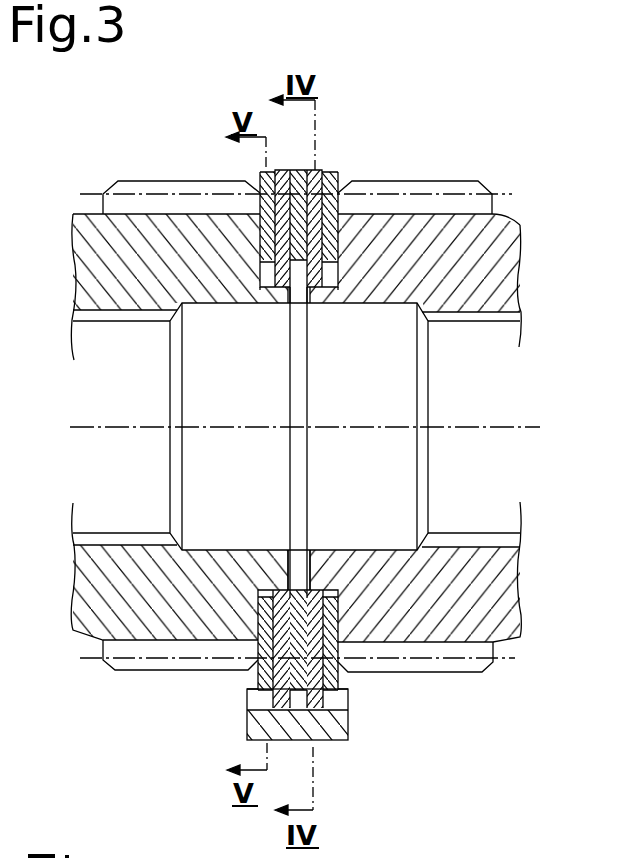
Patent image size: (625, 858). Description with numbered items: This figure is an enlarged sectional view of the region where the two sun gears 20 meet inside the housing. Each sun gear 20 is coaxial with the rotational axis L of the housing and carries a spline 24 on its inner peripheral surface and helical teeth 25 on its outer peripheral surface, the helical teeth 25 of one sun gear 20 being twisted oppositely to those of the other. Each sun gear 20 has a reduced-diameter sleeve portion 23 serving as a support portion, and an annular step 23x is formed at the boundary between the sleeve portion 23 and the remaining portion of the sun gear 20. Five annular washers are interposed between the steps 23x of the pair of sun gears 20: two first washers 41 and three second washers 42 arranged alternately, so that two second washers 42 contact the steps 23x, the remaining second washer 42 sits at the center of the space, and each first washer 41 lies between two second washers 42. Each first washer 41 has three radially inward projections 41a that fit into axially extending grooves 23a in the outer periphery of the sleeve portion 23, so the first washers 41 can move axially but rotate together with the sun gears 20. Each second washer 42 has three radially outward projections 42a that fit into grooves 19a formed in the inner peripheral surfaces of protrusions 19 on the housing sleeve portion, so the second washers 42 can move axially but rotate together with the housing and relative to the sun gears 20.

The protrusion 19 is at (247, 722).
The groove 19a is at (330, 700).
The sun gear 20 is at (183, 178).
The sleeve portion 23 is at (308, 550).
The groove 23a is at (262, 285).
The annular step 23x is at (268, 590).
The spline 24 is at (118, 532).
The helical teeth 25 is at (142, 181).
The first washer 41 is at (288, 170).
The projection 41a is at (288, 292).
The second washer 42 is at (260, 173).
The projection 42a is at (325, 692).
The rotational axis L is at (512, 425).